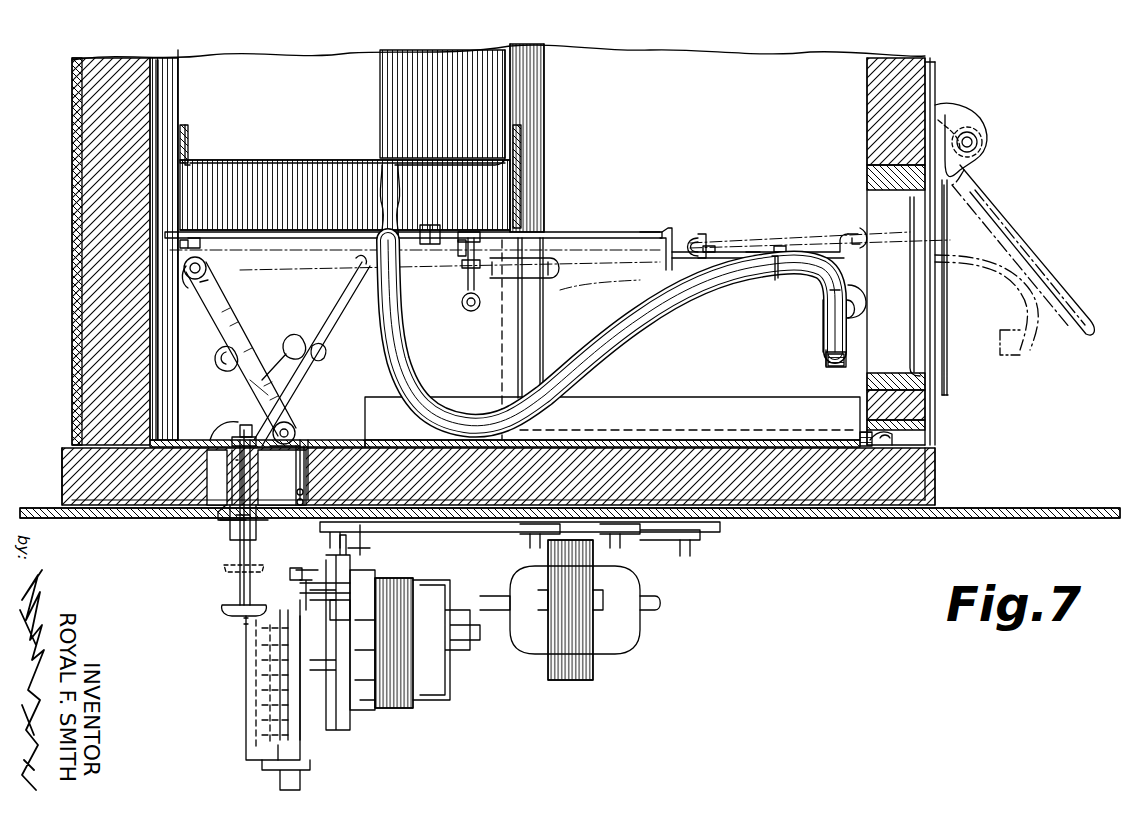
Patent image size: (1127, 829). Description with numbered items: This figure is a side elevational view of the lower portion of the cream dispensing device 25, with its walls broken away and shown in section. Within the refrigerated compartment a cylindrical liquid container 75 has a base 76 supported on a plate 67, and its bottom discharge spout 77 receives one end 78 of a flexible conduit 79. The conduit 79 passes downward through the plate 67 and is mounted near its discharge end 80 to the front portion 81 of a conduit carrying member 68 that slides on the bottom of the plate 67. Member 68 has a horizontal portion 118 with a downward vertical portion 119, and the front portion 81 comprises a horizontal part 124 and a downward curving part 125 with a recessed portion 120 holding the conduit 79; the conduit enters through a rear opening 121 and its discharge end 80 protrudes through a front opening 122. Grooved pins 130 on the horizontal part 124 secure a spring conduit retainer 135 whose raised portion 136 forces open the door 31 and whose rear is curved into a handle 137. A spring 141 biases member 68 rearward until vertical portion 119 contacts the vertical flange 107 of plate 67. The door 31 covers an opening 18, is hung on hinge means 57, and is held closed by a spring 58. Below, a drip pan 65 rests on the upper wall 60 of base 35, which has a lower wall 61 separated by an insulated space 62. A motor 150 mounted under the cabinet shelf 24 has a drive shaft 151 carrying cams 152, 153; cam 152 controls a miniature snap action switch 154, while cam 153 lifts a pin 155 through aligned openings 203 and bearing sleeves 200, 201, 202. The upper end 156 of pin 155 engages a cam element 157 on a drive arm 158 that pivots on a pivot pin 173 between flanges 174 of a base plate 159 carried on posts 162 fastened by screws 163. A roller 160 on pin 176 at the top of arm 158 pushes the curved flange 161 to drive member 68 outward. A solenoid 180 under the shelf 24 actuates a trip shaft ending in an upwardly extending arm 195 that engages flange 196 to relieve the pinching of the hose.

The dispensing device 25 is at (699, 89).
The cylindrical liquid container 75 is at (262, 60).
The base 76 is at (186, 190).
The plate 67 is at (244, 232).
The bottom discharge spout 77 is at (392, 160).
The end of flexible conduit 78 is at (380, 180).
The spring 141 is at (185, 262).
The horizontal portion 118 is at (560, 240).
The conduit carrying member 68 is at (640, 240).
The vertical flange 107 is at (667, 235).
The vertical portion 119 is at (685, 242).
The handle 137 is at (704, 240).
The horizontal part 124 is at (726, 252).
The grooved pins 130 is at (708, 246).
The spring conduit retainer 135 is at (752, 250).
The downward curving part 125 is at (826, 268).
The upwardly extending arm 195 is at (468, 272).
The flange 196 is at (565, 266).
The flexible conduit 79 is at (398, 362).
The recessed portion 120 is at (822, 326).
The opening 121 is at (770, 278).
The front portion 81 is at (810, 328).
The opening 122 is at (826, 352).
The discharge end 80 is at (830, 366).
The raised portion 136 is at (862, 292).
The drip pan 65 is at (650, 408).
The upper wall 60 is at (842, 470).
The base 35 is at (138, 485).
The lower wall 61 is at (818, 512).
The insulated space 62 is at (890, 490).
The cabinet shelf 24 is at (782, 520).
The curved flange 161 is at (212, 266).
The roller 160 is at (190, 276).
The pin 176 is at (204, 285).
The drive arm 158 is at (230, 325).
The flange 174 is at (300, 430).
The pivot pin 173 is at (286, 416).
The upper end 156 is at (240, 362).
The base plate 159 is at (202, 444).
The cam element 157 is at (238, 432).
The posts 162 is at (300, 440).
The bearing sleeve 202 is at (306, 458).
The openings 203 is at (232, 460).
The bearing sleeve 200 is at (230, 536).
The bearing sleeve 201 is at (232, 522).
The screws 163 is at (222, 520).
The pin 155 is at (240, 592).
The cam 152 is at (280, 605).
The cam 153 is at (244, 640).
The miniature snap action switch 154 is at (244, 685).
The drive shaft 151 is at (322, 700).
The motor 150 is at (380, 712).
The solenoid 180 is at (637, 628).
The spring 58 is at (935, 106).
The hinge means 57 is at (978, 140).
The opening 18 is at (900, 340).
The door 31 is at (948, 374).